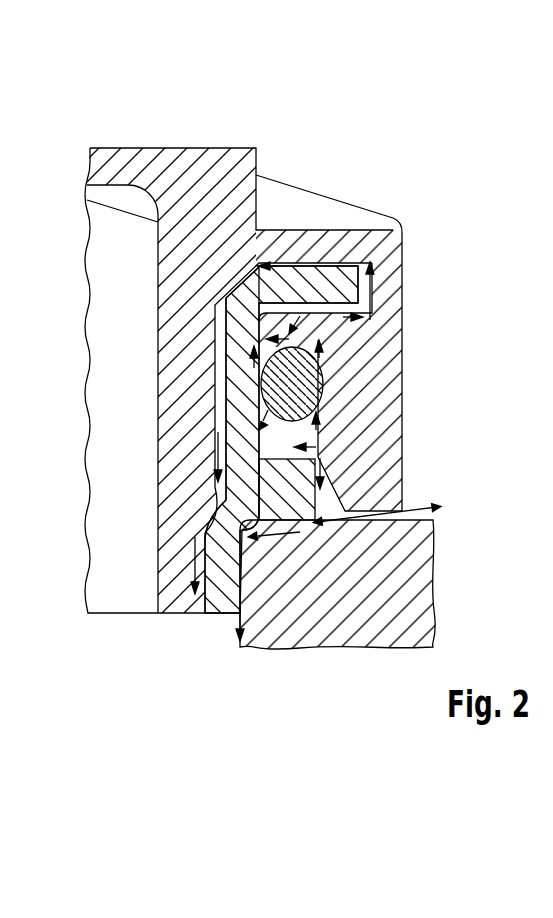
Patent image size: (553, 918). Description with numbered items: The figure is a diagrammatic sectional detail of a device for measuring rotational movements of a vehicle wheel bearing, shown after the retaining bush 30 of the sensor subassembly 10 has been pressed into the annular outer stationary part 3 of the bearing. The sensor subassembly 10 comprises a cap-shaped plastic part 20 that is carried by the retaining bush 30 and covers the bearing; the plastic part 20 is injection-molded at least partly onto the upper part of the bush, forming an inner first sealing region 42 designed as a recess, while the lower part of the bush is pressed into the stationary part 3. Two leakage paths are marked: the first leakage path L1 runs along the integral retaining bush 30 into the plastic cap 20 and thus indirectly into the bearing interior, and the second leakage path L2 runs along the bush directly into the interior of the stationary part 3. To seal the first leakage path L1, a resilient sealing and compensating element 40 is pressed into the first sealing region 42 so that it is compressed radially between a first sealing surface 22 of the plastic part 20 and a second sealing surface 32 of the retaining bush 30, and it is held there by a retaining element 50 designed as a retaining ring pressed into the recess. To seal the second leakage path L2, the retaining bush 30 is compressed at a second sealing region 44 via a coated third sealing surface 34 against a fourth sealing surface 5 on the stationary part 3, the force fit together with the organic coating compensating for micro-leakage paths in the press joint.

The sensor subassembly 10 is at (388, 122).
The cap-shaped plastic part 20 is at (395, 284).
The first sealing region 42 is at (288, 334).
The sealing and compensating element 40 is at (323, 364).
The first sealing surface 22 is at (323, 398).
The second sealing surface 32 is at (258, 370).
The retaining element 50 is at (282, 498).
The retaining bush 30 is at (222, 548).
The first leakage path L1 is at (330, 492).
The fourth sealing surface 5 is at (227, 590).
The second sealing region 44 is at (208, 655).
The third sealing surface 34 is at (246, 595).
The second leakage path L2 is at (273, 520).
The stationary part 3 is at (382, 620).